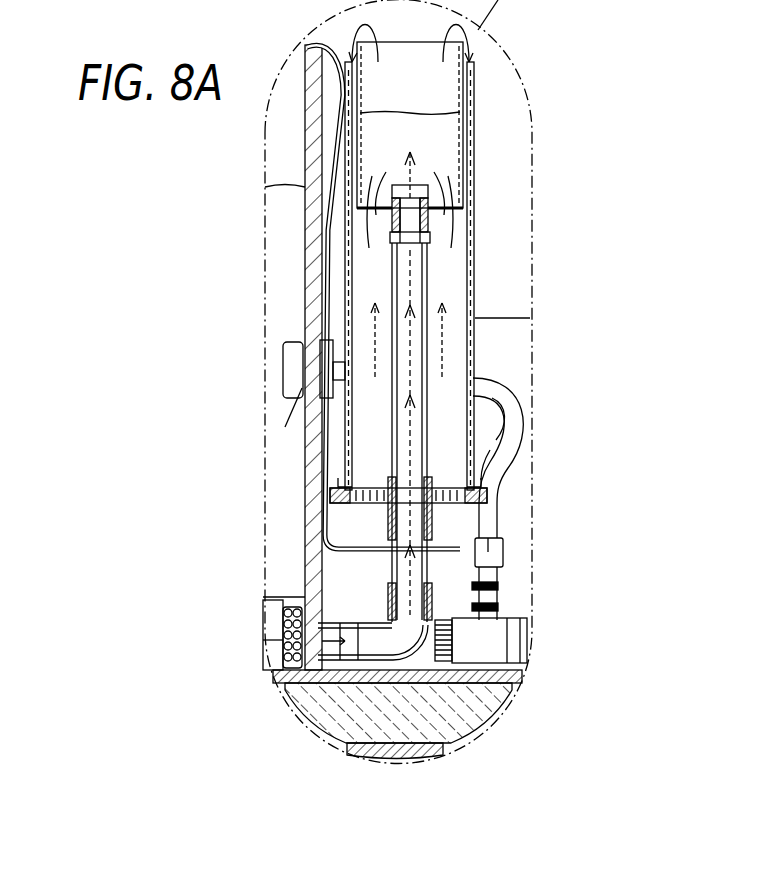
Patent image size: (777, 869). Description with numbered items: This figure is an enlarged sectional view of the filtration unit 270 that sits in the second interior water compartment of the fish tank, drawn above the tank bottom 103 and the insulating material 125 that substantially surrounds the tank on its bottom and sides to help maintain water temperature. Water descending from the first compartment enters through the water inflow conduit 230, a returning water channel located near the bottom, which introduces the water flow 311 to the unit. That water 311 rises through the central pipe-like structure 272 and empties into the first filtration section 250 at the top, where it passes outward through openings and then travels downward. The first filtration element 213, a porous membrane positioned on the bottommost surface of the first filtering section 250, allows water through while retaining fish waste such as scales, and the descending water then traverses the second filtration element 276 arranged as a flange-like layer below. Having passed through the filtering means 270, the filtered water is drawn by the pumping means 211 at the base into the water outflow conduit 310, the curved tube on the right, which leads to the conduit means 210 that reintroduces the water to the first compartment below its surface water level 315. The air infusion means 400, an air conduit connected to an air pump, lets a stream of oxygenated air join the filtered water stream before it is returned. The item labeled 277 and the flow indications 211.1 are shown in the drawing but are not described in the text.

The tank bottom 103 is at (355, 776).
The insulating material 125 is at (490, 713).
The conduit means 210 is at (288, 375).
The pumping means 211 is at (500, 620).
The flow path 211.1 is at (410, 168).
The first filtration element 213 is at (430, 205).
The water inflow conduit 230 is at (273, 630).
The first filtration section 250 is at (423, 82).
The filtration unit 270 is at (457, 417).
The pipe-like structure 272 is at (427, 300).
The second filtration element 276 is at (330, 500).
The connector 277 is at (478, 500).
The water outflow conduit 310 is at (508, 407).
The water flow 311 is at (293, 410).
The surface water level 315 is at (335, 318).
The air infusion means 400 is at (307, 133).